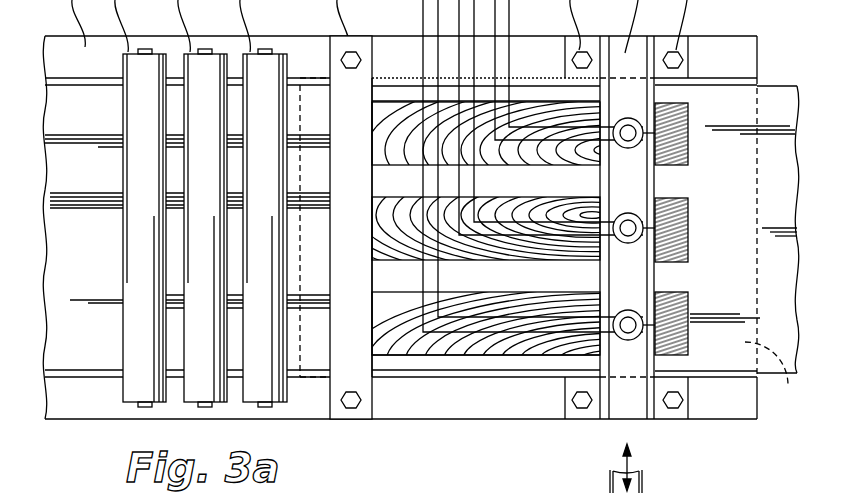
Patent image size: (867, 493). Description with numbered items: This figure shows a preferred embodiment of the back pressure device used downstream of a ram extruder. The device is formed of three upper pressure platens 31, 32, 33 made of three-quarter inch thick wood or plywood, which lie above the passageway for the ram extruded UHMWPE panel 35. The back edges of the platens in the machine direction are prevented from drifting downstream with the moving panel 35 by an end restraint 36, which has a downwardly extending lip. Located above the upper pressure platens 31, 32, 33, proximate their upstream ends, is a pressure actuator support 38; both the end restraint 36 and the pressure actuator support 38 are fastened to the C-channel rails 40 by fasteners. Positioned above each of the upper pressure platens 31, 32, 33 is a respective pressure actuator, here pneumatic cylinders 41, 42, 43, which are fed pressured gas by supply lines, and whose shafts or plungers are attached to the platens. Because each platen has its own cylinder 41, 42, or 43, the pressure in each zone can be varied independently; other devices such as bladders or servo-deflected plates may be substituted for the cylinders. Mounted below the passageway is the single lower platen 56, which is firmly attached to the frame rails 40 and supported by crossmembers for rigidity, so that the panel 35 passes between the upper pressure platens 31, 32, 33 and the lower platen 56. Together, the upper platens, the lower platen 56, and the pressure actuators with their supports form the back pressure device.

The upper pressure platen 31 is at (688, 345).
The upper pressure platen 32 is at (680, 245).
The upper pressure platen 33 is at (678, 148).
The UHMWPE panel 35 is at (777, 97).
The end restraint 36 is at (362, 413).
The pressure actuator support 38 is at (608, 468).
The C-channel rails 40 is at (85, 410).
The pneumatic cylinder 41 is at (658, 322).
The pneumatic cylinder 42 is at (678, 218).
The pneumatic cylinder 43 is at (688, 125).
The lower platen 56 is at (307, 379).